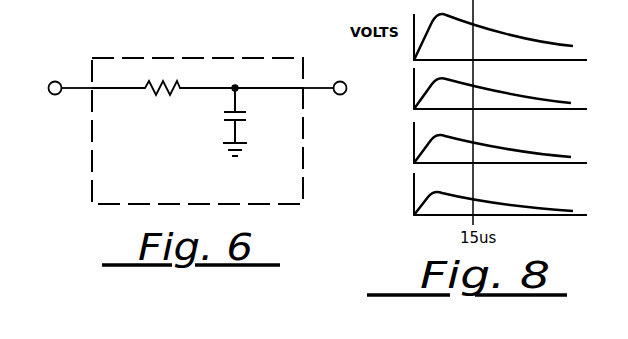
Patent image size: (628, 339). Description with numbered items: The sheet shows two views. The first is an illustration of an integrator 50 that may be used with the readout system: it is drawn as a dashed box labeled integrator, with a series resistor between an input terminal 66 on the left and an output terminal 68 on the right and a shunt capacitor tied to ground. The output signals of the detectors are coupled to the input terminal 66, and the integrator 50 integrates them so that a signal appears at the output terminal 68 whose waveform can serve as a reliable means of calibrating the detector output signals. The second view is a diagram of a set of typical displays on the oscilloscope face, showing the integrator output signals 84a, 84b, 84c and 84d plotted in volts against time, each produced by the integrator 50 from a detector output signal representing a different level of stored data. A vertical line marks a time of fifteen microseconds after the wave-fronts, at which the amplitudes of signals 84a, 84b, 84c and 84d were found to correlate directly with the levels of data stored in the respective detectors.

In FIG. 6, the integrator 50 is at (208, 58).
In FIG. 6, the input terminal 66 is at (50, 83).
In FIG. 6, the output terminal 68 is at (346, 83).
In FIG. 8, the integrator output signal 84a is at (515, 205).
In FIG. 8, the integrator output signal 84b is at (511, 148).
In FIG. 8, the integrator output signal 84c is at (510, 91).
In FIG. 8, the integrator output signal 84d is at (510, 33).